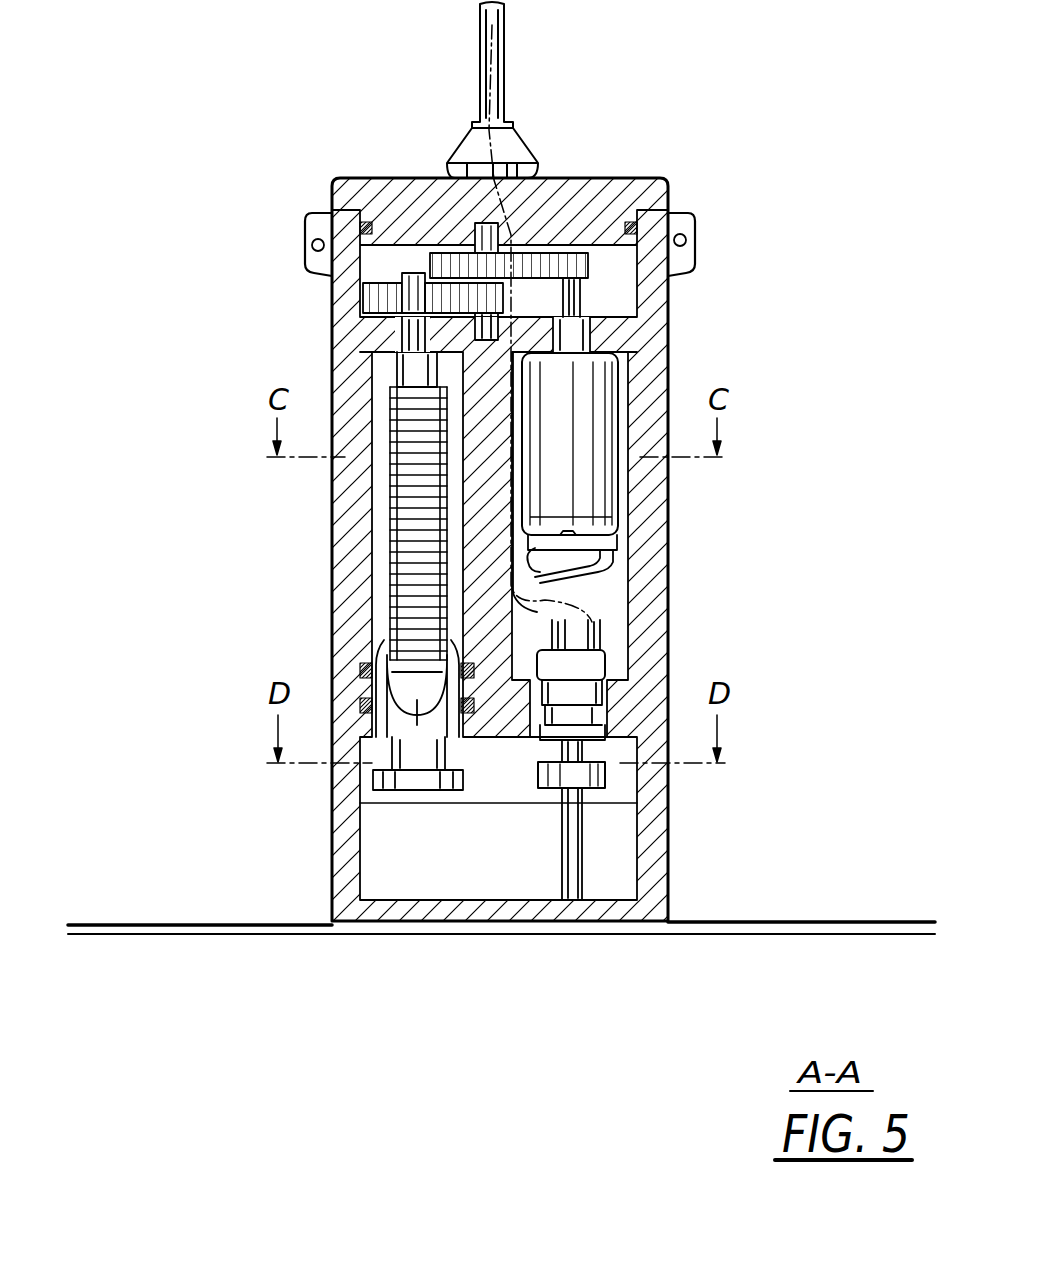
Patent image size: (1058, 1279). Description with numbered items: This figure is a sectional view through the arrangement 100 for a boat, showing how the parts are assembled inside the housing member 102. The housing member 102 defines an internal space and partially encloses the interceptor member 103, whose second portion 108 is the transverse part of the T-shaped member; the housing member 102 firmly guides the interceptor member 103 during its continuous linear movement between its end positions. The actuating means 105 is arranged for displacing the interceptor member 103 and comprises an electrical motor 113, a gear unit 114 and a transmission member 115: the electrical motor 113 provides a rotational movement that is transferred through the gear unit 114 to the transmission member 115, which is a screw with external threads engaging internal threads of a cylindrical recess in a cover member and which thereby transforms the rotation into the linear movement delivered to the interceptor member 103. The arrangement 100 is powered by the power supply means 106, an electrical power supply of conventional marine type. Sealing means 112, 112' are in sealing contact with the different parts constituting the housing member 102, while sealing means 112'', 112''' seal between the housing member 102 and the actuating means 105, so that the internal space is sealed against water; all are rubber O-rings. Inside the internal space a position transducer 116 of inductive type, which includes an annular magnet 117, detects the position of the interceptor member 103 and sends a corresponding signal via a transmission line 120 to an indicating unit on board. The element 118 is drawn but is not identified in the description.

The arrangement 100 is at (436, 460).
The housing member 102 is at (668, 300).
The interceptor member 103 is at (503, 780).
The actuating means 105 is at (300, 354).
The power supply means 106 is at (505, 55).
The second portion 108 is at (738, 934).
The sealing means 112 is at (289, 168).
The sealing means 112' is at (707, 180).
The sealing means 112'' is at (334, 626).
The sealing means 112''' is at (332, 666).
The electrical motor 113 is at (577, 407).
The gear unit 114 is at (370, 294).
The transmission member 115 is at (383, 541).
The position transducer 116 is at (577, 697).
The annular magnet 117 is at (600, 780).
The cable 118 is at (587, 575).
The transmission line 120 is at (492, 40).